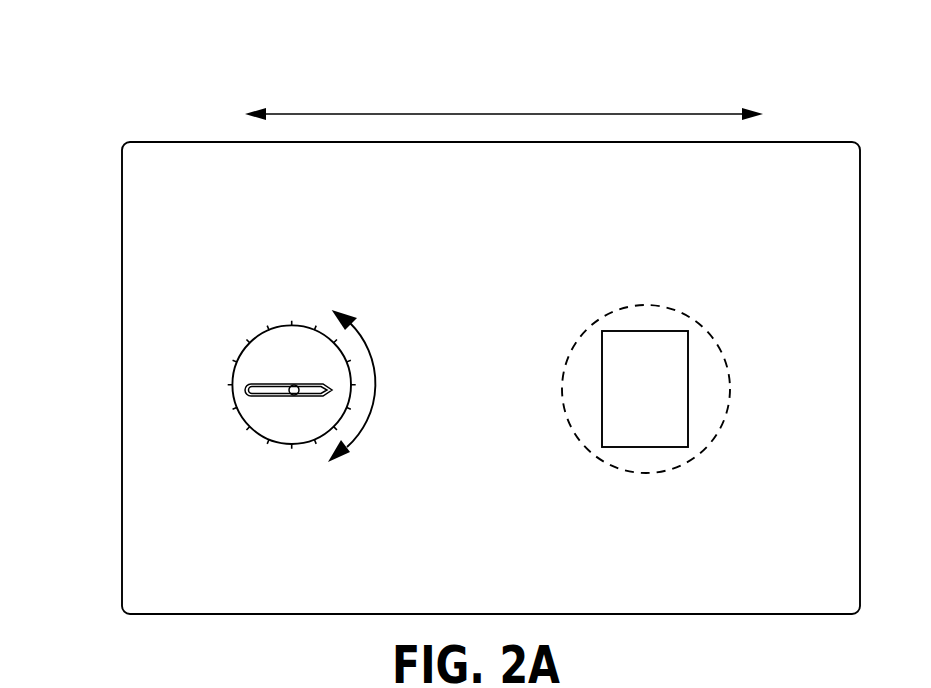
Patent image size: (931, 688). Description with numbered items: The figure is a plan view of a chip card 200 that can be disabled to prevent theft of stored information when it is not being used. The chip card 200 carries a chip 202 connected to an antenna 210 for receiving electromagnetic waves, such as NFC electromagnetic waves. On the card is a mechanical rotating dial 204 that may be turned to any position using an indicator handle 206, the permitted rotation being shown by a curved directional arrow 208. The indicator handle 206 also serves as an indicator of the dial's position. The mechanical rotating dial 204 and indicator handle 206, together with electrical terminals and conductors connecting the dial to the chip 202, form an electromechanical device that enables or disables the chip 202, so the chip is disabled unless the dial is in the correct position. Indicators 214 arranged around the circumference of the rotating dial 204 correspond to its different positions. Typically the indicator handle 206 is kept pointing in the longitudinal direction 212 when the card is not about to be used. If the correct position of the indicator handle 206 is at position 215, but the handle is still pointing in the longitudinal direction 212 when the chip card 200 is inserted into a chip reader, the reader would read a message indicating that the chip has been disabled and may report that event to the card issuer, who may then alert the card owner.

The chip card 200 is at (132, 86).
The chip 202 is at (647, 330).
The mechanical rotating dial 204 is at (300, 324).
The indicator handle 206 is at (285, 397).
The curved directional arrow 208 is at (380, 385).
The antenna 210 is at (727, 373).
The longitudinal direction 212 is at (573, 112).
The indicators 214 is at (232, 387).
The position 215 is at (334, 341).